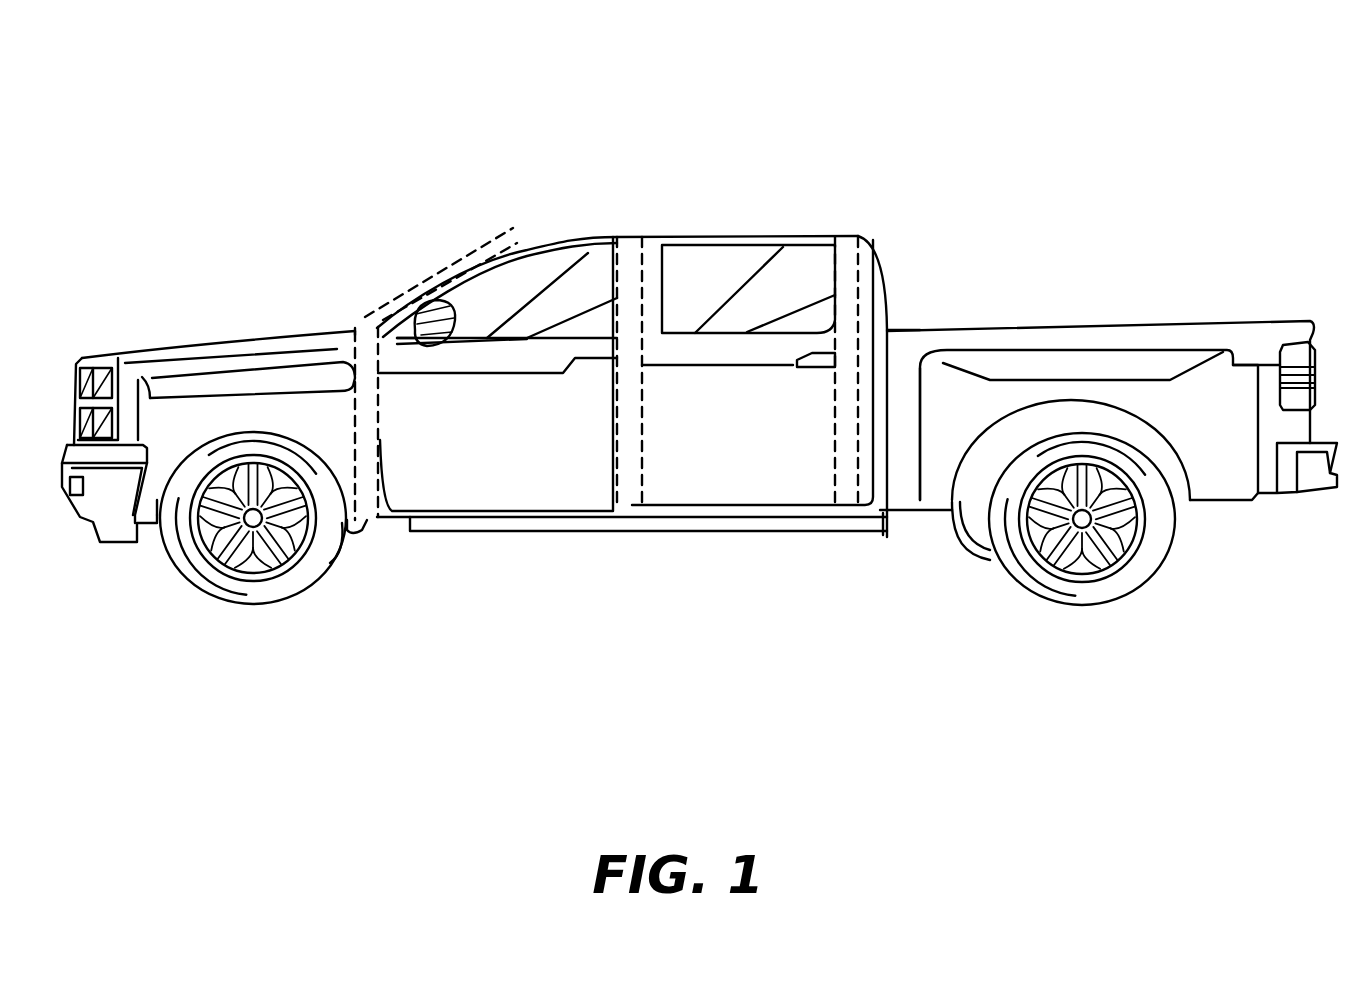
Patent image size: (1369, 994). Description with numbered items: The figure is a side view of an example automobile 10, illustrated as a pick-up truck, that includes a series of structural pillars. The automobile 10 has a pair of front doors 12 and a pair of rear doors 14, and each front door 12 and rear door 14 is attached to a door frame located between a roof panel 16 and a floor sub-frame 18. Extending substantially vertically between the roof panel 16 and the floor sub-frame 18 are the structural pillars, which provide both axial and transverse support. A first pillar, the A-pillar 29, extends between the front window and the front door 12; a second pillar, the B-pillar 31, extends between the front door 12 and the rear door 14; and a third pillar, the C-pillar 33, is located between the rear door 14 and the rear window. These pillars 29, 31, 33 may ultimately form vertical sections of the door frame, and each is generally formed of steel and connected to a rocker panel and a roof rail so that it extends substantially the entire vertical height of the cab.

The automobile 10 is at (699, 334).
The front door 12 is at (575, 468).
The rear door 14 is at (788, 465).
The roof panel 16 is at (727, 233).
The floor sub-frame 18 is at (884, 515).
The A-pillar 29 is at (365, 320).
The B-pillar 31 is at (633, 231).
The C-pillar 33 is at (848, 231).